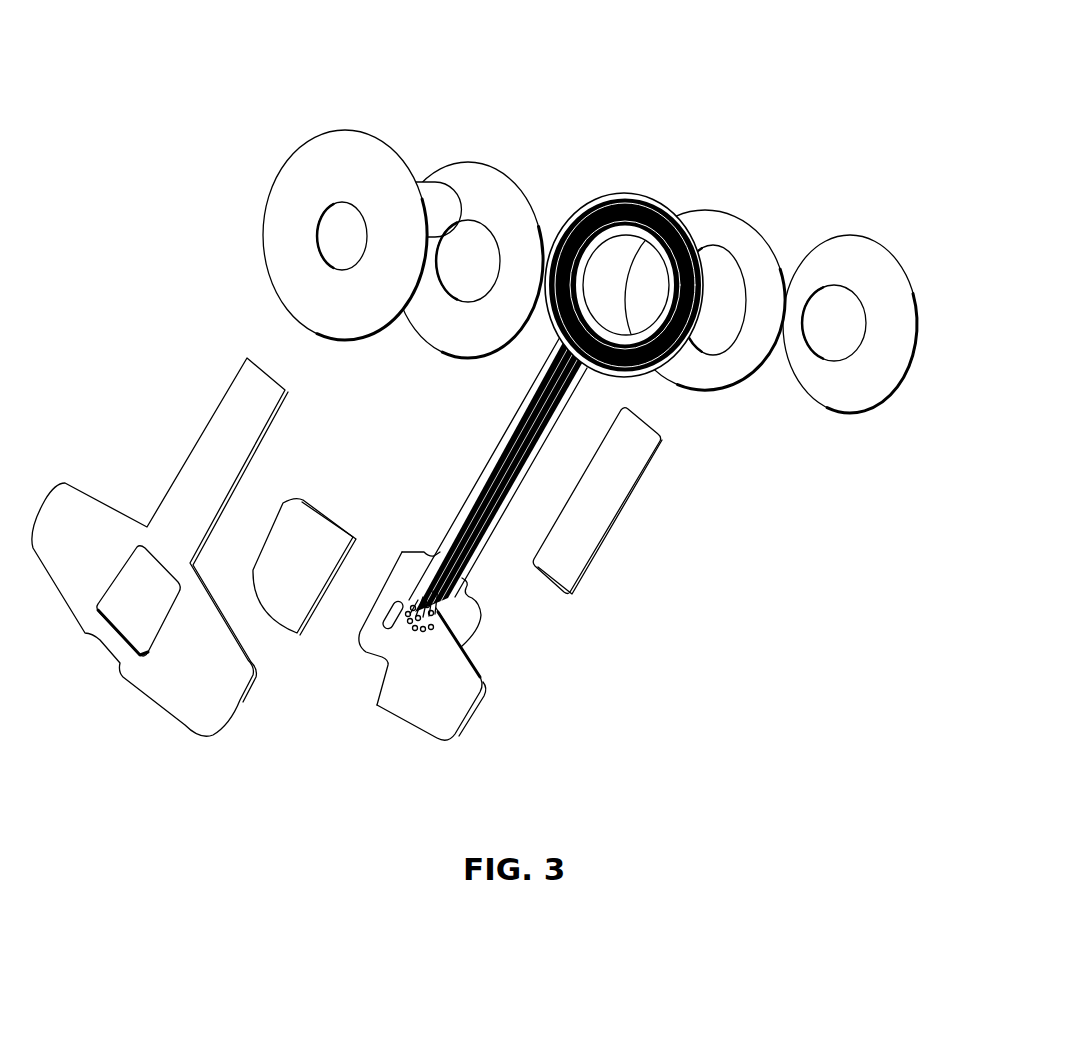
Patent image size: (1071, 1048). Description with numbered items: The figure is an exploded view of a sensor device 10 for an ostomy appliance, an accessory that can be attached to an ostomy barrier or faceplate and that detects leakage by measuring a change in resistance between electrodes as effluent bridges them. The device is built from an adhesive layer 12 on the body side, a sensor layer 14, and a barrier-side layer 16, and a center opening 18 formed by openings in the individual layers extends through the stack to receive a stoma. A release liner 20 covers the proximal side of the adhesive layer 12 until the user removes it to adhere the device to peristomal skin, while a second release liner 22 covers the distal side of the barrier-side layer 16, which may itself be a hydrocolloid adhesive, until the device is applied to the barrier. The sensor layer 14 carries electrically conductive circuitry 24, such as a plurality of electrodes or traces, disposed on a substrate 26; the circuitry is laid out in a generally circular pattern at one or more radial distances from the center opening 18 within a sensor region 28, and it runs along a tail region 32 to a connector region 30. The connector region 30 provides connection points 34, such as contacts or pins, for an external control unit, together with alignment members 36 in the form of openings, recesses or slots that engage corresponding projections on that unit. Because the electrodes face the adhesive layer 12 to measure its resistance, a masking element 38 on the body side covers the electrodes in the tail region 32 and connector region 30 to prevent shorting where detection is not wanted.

The sensor device 10 is at (375, 48).
The adhesive layer 12 is at (468, 258).
The sensor layer 14 is at (651, 264).
The barrier-side layer 16 is at (750, 214).
The center opening 18 is at (470, 293).
The release liner 20 is at (298, 193).
The release liner 22 is at (868, 236).
The electrically conductive circuitry 24 is at (652, 205).
The substrate 26 is at (670, 217).
The sensor region 28 is at (648, 362).
The connector region 30 is at (462, 540).
The tail region 32 is at (533, 465).
The connection points 34 is at (412, 597).
The alignment members 36 is at (407, 615).
The masking element 38 is at (218, 440).